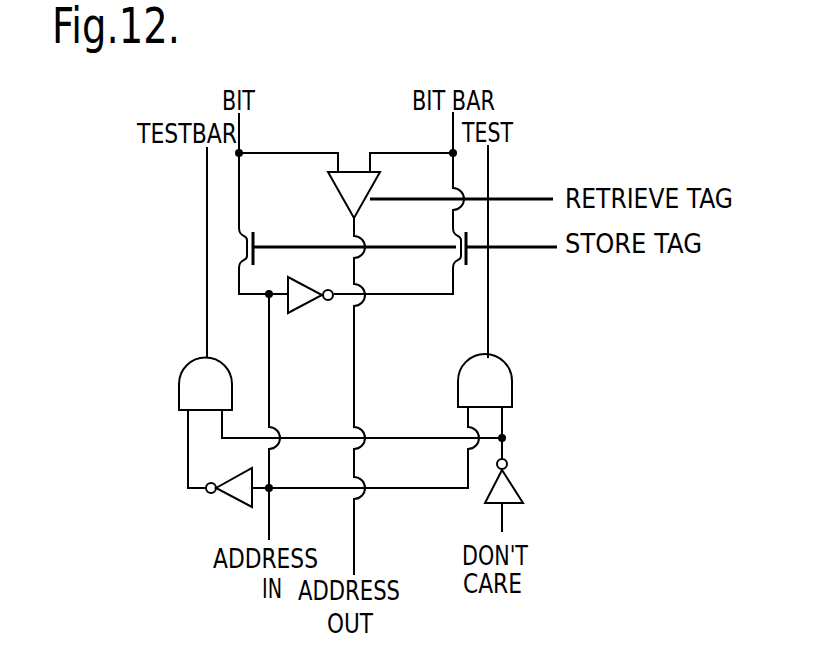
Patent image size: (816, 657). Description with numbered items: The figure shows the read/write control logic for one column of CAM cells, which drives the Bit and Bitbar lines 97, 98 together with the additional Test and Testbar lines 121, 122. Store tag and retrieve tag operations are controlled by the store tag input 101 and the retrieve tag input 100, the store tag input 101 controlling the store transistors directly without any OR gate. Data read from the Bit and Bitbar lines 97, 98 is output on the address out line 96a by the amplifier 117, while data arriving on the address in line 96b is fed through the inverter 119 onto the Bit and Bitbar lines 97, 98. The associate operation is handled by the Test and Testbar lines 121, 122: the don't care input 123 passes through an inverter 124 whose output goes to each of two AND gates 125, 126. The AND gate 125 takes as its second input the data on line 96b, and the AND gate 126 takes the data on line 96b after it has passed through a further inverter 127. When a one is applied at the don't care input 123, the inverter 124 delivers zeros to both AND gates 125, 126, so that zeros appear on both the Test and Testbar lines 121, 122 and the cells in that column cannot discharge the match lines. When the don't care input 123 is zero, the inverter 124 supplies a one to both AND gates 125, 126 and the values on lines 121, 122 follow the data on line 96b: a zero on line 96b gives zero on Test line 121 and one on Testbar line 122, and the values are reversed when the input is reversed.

The Bit line 97 is at (240, 133).
The Bitbar line 98 is at (452, 131).
The Test line 121 is at (490, 160).
The Testbar line 122 is at (207, 207).
The retrieve tag input 100 is at (551, 196).
The store tag input 101 is at (544, 251).
The amplifier 117 is at (333, 190).
The inverter 119 is at (303, 309).
The AND gate 125 is at (505, 388).
The AND gate 126 is at (185, 388).
The inverter 127 is at (243, 470).
The inverter 124 is at (512, 487).
The don't care input 123 is at (505, 520).
The address out line 96a is at (422, 540).
The address in line 96b is at (268, 519).